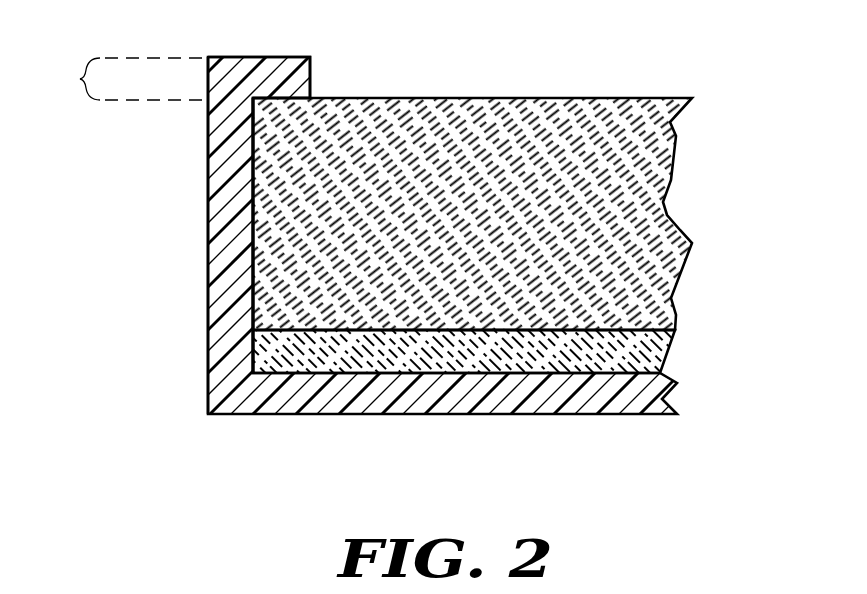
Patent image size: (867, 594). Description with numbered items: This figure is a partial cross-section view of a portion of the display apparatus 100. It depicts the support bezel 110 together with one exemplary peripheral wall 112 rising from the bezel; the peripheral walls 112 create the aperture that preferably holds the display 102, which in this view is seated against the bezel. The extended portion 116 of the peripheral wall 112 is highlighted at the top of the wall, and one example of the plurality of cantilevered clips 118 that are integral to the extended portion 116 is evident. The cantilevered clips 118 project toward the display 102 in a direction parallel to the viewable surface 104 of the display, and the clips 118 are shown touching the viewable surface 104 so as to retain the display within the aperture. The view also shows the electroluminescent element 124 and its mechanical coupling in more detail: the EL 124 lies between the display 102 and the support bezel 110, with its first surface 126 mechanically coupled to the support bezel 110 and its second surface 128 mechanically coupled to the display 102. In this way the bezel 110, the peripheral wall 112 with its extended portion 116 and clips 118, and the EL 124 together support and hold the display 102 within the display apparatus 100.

The display apparatus 100 is at (433, 245).
The display 102 is at (253, 195).
The viewable surface 104 is at (608, 97).
The support bezel 110 is at (612, 418).
The peripheral wall 112 is at (222, 250).
The extended portion 116 is at (121, 79).
The cantilevered clip 118 is at (293, 72).
The electroluminescent element 124 is at (377, 355).
The first surface 126 is at (642, 368).
The second surface 128 is at (623, 327).